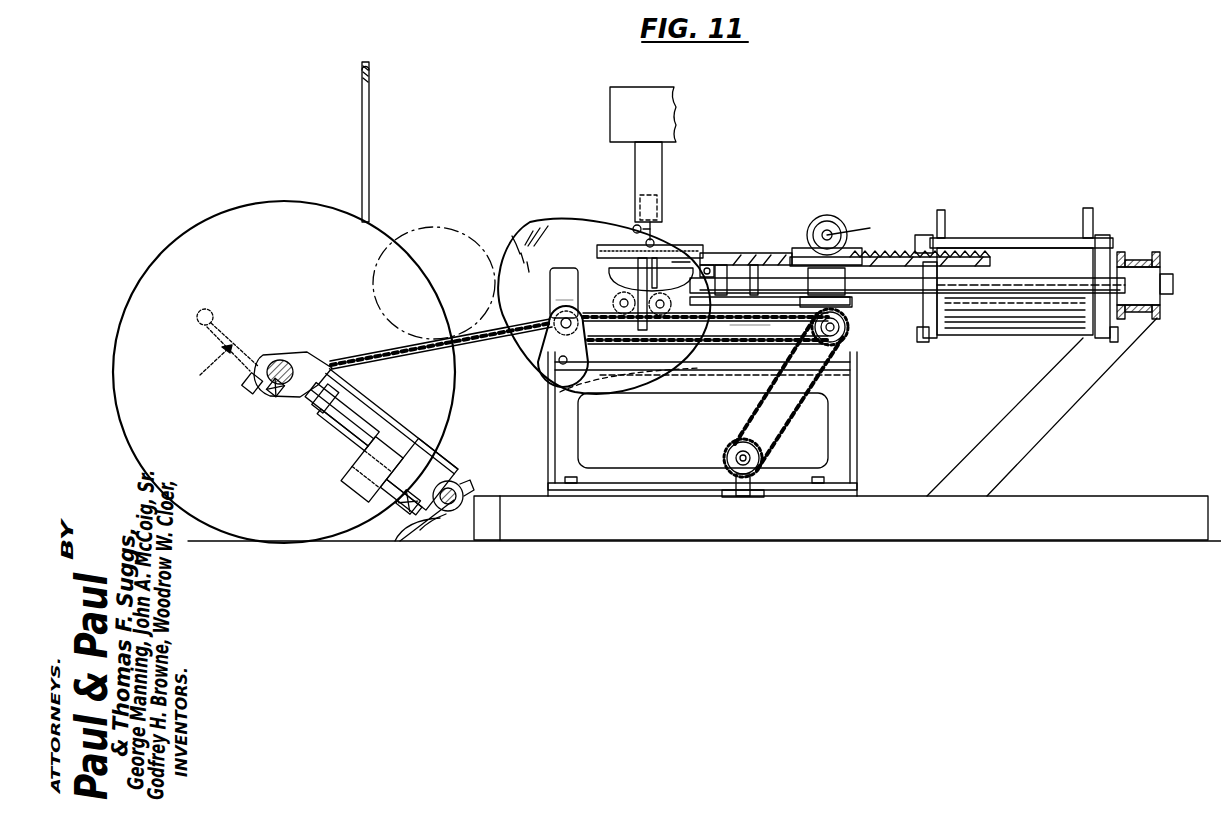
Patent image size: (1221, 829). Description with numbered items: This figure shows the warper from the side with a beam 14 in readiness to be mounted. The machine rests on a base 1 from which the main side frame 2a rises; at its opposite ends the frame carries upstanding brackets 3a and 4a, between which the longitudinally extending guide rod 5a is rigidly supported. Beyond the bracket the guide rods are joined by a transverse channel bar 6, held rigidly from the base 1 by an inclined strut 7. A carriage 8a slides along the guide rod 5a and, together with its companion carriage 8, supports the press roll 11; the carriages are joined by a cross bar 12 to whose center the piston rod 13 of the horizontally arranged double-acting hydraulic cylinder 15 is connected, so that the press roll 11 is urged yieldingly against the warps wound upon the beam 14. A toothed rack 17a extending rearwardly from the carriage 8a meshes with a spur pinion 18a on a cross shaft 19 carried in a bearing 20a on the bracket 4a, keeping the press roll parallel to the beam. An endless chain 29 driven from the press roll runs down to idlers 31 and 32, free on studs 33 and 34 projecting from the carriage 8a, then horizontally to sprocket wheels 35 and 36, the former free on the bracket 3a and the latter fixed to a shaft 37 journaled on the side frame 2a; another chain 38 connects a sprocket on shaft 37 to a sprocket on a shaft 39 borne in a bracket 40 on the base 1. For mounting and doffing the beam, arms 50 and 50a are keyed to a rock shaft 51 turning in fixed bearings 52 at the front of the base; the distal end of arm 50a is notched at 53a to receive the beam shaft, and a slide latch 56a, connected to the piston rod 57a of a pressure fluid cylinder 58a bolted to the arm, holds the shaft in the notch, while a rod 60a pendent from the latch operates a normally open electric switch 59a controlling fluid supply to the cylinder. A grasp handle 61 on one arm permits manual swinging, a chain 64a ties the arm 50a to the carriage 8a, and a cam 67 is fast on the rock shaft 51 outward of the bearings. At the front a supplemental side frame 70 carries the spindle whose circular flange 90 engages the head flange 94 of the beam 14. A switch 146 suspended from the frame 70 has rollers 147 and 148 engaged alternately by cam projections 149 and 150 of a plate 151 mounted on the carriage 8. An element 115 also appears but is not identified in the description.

The base 1 is at (909, 486).
The main side frame 2a is at (544, 474).
The upstanding bracket 3a is at (560, 276).
The upstanding bracket 4a is at (826, 287).
The guide rod 5a is at (1030, 276).
The transverse channel bar 6 is at (1139, 258).
The inclined strut 7 is at (1116, 366).
The carriage 8 is at (672, 272).
The carriage 8a is at (710, 284).
The press roll 11 is at (515, 237).
The cross bar 12 is at (748, 262).
The piston rod 13 is at (886, 296).
The beam 14 is at (216, 212).
The double-acting hydraulic cylinder 15 is at (1004, 318).
The toothed rack 17a is at (794, 244).
The spur pinion 18a is at (838, 222).
The cross shaft 19 is at (857, 229).
The bearing 20a is at (824, 216).
The endless chain 29 is at (754, 324).
The idler 31 is at (588, 258).
The idler 32 is at (705, 328).
The stud 33 is at (566, 295).
The stud 34 is at (660, 315).
The sprocket wheel 35 is at (582, 346).
The sprocket wheel 36 is at (818, 326).
The shaft 37 is at (848, 334).
The chain 38 is at (773, 438).
The shaft 39 is at (728, 452).
The bracket 40 is at (742, 496).
The arm 50 is at (200, 375).
The arm 50a is at (337, 443).
The rock shaft 51 is at (450, 484).
The fixed bearing 52 is at (448, 528).
The notch 53a is at (260, 354).
The slide latch 56a is at (261, 396).
The piston rod 57a is at (333, 418).
The pressure fluid cylinder 58a is at (374, 494).
The normally open electric switch 59a is at (346, 486).
The rod 60a is at (327, 444).
The grasp handle 61 is at (213, 312).
The chain 64a is at (394, 350).
The cam 67 is at (466, 488).
The supplemental side frame 70 is at (642, 92).
The circular flange 90 is at (434, 246).
The head flange 94 is at (128, 450).
The rod 115 is at (370, 92).
The switch 146 is at (632, 176).
The roller 147 is at (633, 206).
The roller 148 is at (654, 234).
The cam projection 149 is at (632, 227).
The cam projection 150 is at (686, 262).
The plate 151 is at (672, 240).